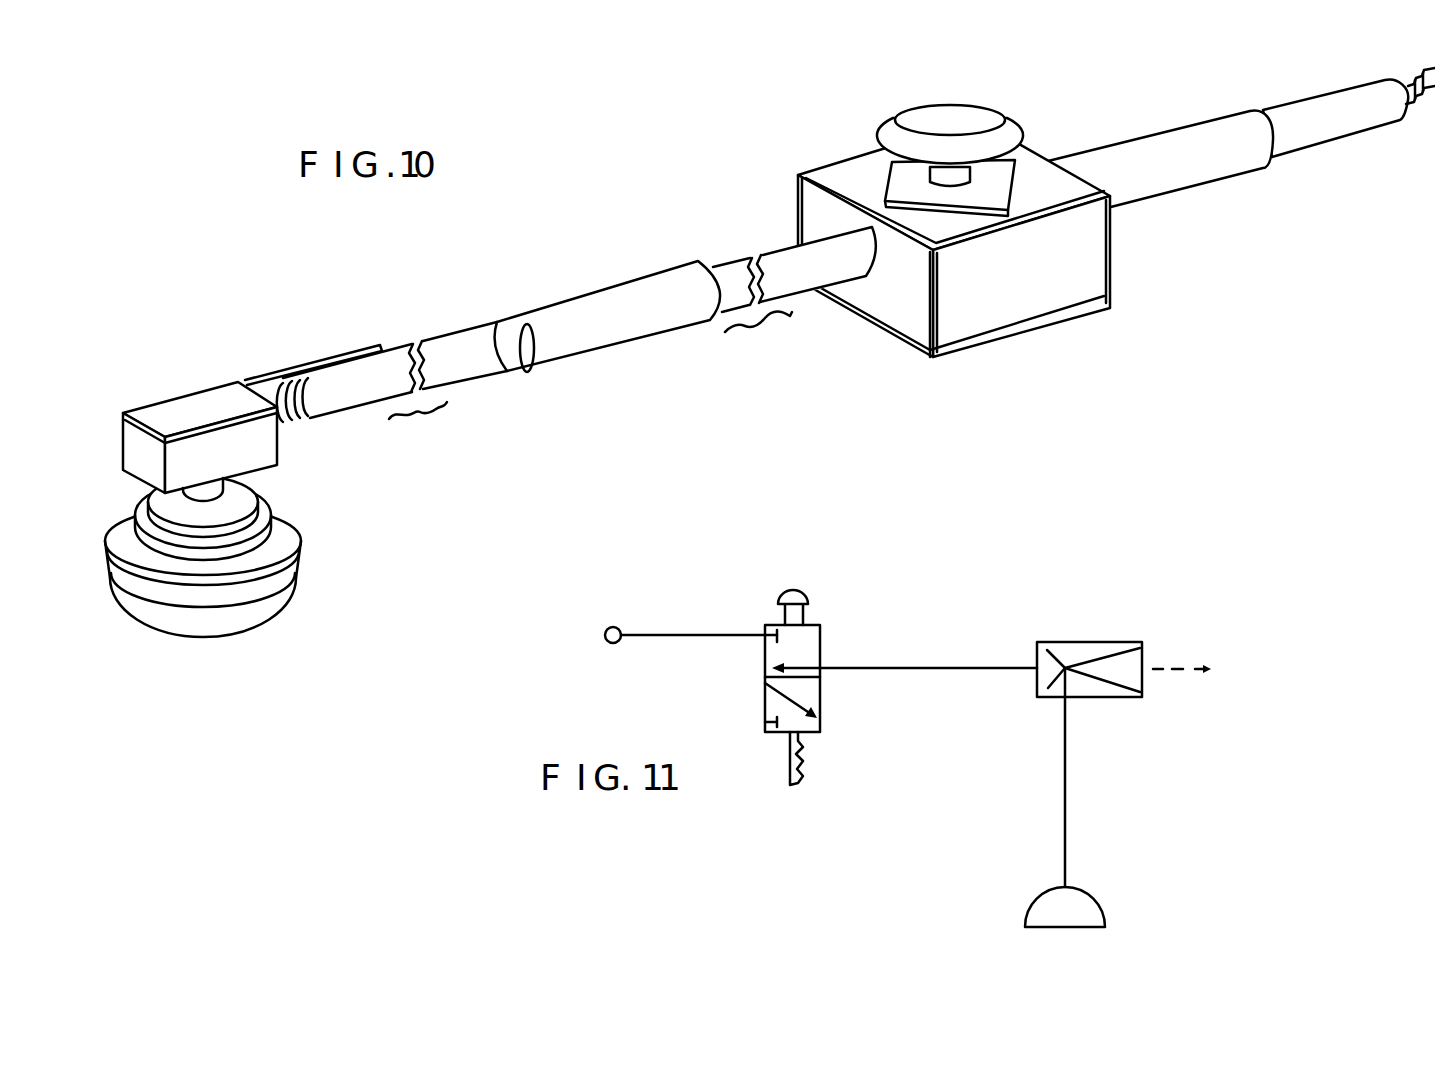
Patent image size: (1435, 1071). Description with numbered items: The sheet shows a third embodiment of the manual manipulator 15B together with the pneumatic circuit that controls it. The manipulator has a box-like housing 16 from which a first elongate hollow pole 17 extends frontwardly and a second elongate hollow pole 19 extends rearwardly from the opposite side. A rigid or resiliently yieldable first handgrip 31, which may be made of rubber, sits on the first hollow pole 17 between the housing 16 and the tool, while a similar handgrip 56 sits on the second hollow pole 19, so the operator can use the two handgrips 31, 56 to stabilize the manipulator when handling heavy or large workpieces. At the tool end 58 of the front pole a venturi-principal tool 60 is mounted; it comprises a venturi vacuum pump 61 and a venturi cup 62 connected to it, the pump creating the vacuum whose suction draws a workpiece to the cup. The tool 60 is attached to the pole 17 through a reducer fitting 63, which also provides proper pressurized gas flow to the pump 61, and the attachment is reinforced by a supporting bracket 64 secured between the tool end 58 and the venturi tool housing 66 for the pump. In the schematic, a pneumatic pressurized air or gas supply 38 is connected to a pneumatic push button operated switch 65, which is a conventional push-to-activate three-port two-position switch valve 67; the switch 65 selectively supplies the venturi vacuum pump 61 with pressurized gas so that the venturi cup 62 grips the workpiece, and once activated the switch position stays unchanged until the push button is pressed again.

In FIG. 10, the manual manipulator 15B is at (748, 188).
In FIG. 10, the housing 16 is at (822, 175).
In FIG. 10, the first elongate hollow pole 17 is at (450, 340).
In FIG. 10, the second elongate hollow pole 19 is at (1275, 108).
In FIG. 10, the first handgrip 31 is at (580, 305).
In FIG. 11, the pneumatic pressurized air or gas supply 38 is at (616, 628).
In FIG. 10, the handgrip 56 is at (1098, 149).
In FIG. 10, the tool end 58 is at (312, 420).
In FIG. 10, the venturi-principal tool 60 is at (262, 472).
In FIG. 11, the venturi-principal tool 60 is at (1074, 740).
In FIG. 11, the venturi vacuum pump 61 is at (1140, 640).
In FIG. 10, the venturi cup 62 is at (294, 553).
In FIG. 11, the venturi cup 62 is at (1087, 893).
In FIG. 10, the reducer fitting 63 is at (286, 420).
In FIG. 10, the supporting bracket 64 is at (281, 372).
In FIG. 10, the push button operated switch 65 is at (915, 115).
In FIG. 11, the push button operated switch 65 is at (793, 592).
In FIG. 10, the venturi tool housing 66 is at (226, 324).
In FIG. 11, the 3-port 2-position switch valve 67 is at (768, 678).